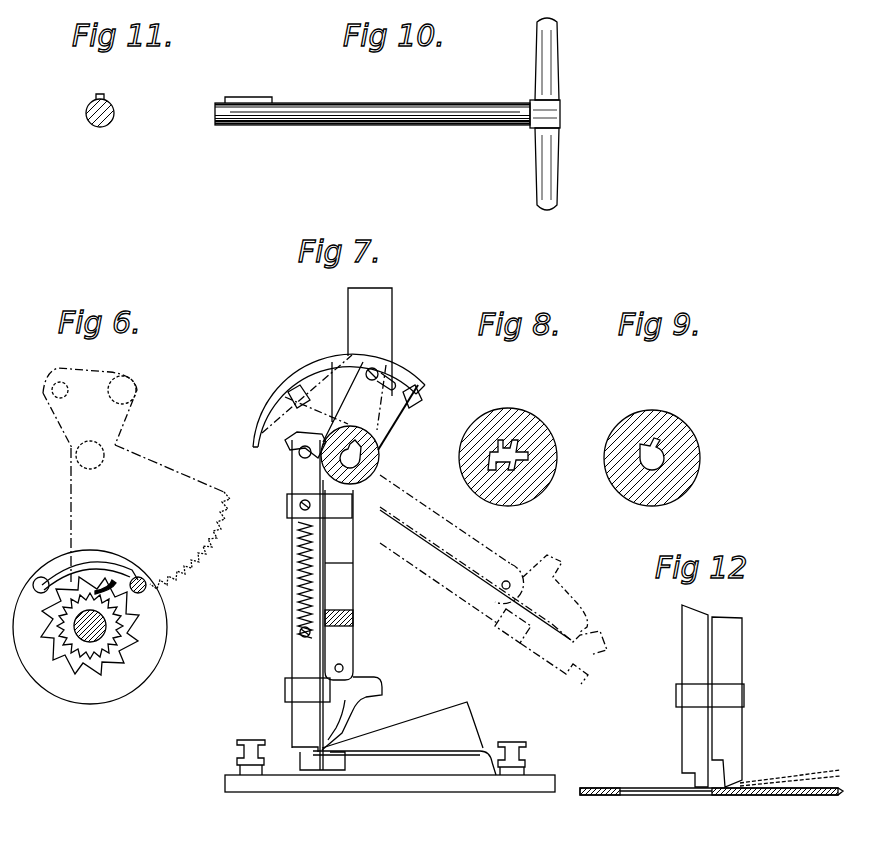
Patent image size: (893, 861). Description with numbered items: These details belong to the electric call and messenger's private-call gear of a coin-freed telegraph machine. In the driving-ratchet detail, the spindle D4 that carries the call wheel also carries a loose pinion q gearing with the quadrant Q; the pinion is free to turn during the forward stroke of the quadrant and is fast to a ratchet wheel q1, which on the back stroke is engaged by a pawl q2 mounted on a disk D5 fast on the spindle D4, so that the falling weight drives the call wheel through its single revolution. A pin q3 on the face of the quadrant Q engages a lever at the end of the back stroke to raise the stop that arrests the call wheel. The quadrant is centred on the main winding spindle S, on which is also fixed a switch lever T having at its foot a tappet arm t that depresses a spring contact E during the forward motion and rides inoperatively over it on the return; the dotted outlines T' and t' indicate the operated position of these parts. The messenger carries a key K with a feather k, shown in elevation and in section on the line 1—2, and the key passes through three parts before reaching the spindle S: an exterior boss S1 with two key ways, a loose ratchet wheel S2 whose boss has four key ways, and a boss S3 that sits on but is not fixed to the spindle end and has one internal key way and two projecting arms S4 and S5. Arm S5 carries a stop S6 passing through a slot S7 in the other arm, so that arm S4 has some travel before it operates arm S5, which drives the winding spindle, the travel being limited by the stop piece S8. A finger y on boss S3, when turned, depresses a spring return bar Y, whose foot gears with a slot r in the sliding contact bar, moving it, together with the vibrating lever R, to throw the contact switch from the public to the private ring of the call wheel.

In FIG. 11, the key K is at (112, 122).
In FIG. 10, the key K is at (418, 106).
In FIG. 11, the feather k is at (100, 94).
In FIG. 10, the feather k is at (270, 97).
In FIG. 10, the section line end 1 is at (246, 140).
In FIG. 10, the section line end 2 is at (244, 156).
In FIG. 6, the main winding spindle S is at (88, 455).
In FIG. 9, the main winding spindle S is at (652, 454).
In FIG. 6, the quadrant Q is at (162, 491).
In FIG. 6, the pin q3 is at (186, 500).
In FIG. 6, the pawl q2 is at (128, 593).
In FIG. 6, the ratchet wheel q1 is at (133, 637).
In FIG. 6, the loose pinion q is at (100, 660).
In FIG. 6, the spindle D4 is at (67, 631).
In FIG. 6, the disk D5 is at (140, 697).
In FIG. 9, the exterior boss S1 is at (660, 450).
In FIG. 8, the loose ratchet wheel S2 is at (497, 448).
In FIG. 7, the boss S3 is at (379, 460).
In FIG. 7, the arm S4 is at (324, 394).
In FIG. 7, the arm S5 is at (343, 368).
In FIG. 7, the stop S6 is at (376, 369).
In FIG. 7, the slot S7 is at (418, 387).
In FIG. 7, the stop piece S8 is at (296, 385).
In FIG. 7, the finger y is at (286, 447).
In FIG. 7, the spring return bar Y is at (295, 661).
In FIG. 12, the spring return bar Y is at (694, 696).
In FIG. 7, the switch lever T is at (355, 585).
In FIG. 7, the lever arm T' is at (493, 579).
In FIG. 7, the lever arm end t' is at (555, 593).
In FIG. 7, the tappet arm t is at (352, 713).
In FIG. 7, the spring contact E is at (390, 747).
In FIG. 12, the vibrating lever R is at (711, 779).
In FIG. 12, the slot r is at (640, 797).